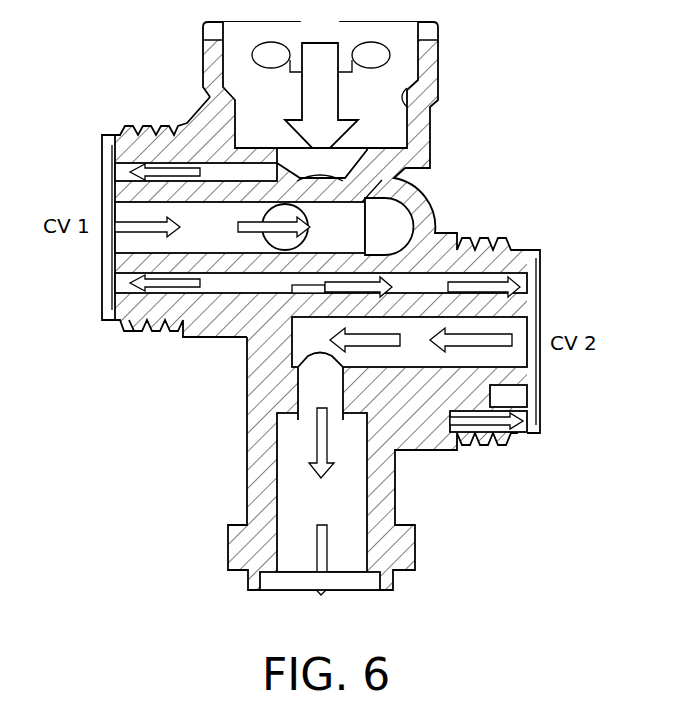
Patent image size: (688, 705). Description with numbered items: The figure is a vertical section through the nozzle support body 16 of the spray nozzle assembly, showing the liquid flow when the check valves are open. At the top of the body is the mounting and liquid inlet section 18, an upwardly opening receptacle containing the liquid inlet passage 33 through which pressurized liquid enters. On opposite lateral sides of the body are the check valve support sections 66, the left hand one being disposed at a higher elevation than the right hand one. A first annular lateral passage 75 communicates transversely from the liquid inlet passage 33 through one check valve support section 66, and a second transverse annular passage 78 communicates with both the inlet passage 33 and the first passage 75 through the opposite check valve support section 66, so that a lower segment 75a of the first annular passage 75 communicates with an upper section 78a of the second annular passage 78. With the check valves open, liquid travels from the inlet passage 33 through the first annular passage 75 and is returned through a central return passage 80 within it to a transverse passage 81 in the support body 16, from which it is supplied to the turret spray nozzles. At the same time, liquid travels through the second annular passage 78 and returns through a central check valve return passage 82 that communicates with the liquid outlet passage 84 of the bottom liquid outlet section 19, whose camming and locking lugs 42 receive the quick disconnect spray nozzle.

The nozzle support body 16 is at (447, 212).
The mounting and liquid inlet section 18 is at (440, 67).
The liquid inlet passage 33 is at (440, 87).
The first annular lateral passage 75 is at (222, 172).
The lower segment of the first annular passage 75a is at (250, 283).
The second transverse annular passage 78 is at (436, 283).
The upper section of the second annular passage 78a is at (520, 398).
The central return passage 80 is at (197, 225).
The transverse passage 81 is at (390, 212).
The central check valve return passage 82 is at (433, 358).
The liquid outlet passage 84 is at (288, 500).
The bottom liquid outlet section 19 is at (393, 493).
The camming and locking lugs 42 is at (227, 552).
The check valve support sections 66 is at (140, 328).